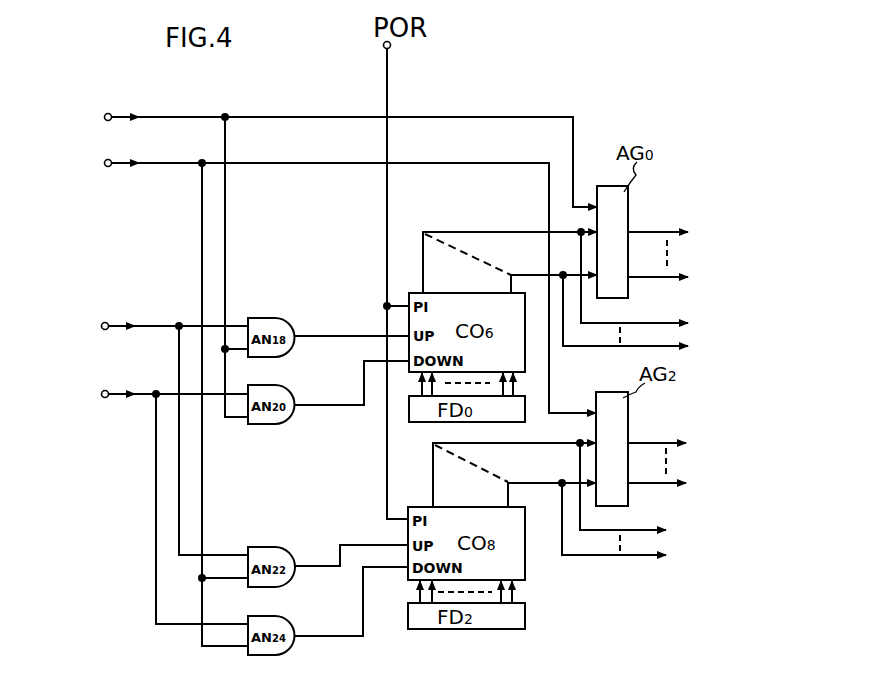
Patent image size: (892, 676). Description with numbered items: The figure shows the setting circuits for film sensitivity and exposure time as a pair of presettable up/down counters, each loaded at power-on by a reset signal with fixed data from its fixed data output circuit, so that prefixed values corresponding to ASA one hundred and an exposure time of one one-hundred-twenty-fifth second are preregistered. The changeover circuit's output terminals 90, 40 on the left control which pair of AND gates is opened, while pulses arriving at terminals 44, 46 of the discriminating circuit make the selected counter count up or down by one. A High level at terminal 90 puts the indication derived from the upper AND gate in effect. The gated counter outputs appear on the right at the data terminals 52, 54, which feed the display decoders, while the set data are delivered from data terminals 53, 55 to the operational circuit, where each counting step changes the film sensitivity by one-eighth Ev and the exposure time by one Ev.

The output terminal of changeover circuit 90 is at (331, 259).
The output terminal of changeover circuit 40 is at (331, 397).
The pulse terminal of discriminating circuit 44 is at (155, 433).
The pulse terminal of discriminating circuit 46 is at (155, 501).
The data terminals 52 is at (694, 225).
The data terminals 53 is at (694, 315).
The data terminals 54 is at (694, 432).
The data terminals 55 is at (689, 515).